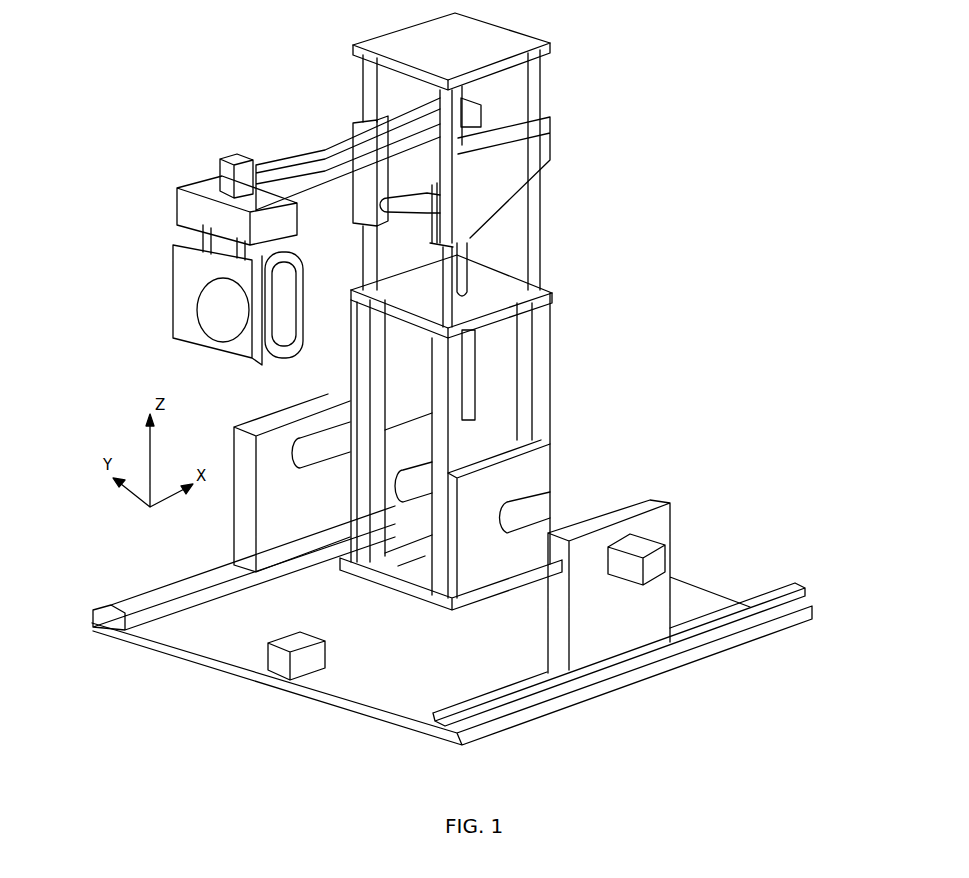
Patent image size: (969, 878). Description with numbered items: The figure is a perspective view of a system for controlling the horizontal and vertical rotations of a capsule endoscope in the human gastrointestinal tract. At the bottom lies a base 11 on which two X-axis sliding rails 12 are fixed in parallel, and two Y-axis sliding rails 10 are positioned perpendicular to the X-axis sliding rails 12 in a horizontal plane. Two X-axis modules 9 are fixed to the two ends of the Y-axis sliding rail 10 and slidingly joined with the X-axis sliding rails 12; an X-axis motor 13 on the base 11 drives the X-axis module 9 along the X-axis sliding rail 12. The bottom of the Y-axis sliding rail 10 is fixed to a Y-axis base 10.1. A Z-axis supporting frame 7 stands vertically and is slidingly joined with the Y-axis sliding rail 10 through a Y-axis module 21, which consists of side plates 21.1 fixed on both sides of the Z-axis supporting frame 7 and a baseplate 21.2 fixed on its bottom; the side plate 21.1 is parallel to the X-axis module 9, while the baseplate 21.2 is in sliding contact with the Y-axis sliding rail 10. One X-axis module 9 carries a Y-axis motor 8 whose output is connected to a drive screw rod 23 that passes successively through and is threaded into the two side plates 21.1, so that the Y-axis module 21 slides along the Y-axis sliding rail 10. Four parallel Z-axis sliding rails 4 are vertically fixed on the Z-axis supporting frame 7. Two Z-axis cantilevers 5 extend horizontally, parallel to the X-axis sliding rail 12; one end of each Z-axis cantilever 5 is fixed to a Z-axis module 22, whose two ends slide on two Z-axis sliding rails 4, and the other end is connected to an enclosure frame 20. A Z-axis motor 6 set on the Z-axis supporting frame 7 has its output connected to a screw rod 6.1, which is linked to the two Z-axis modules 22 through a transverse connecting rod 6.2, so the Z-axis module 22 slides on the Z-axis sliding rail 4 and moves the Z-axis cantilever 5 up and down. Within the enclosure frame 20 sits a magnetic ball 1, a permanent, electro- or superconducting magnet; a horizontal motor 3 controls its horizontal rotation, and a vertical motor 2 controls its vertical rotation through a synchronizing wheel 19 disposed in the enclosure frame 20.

The magnetic ball 1 is at (222, 316).
The vertical motor 2 is at (257, 265).
The horizontal motor 3 is at (230, 174).
The Z-axis sliding rail 4 is at (540, 87).
The Z-axis cantilever 5 is at (378, 181).
The Z-axis motor 6 is at (470, 338).
The screw rod 6.1 is at (460, 269).
The transverse connecting rod 6.2 is at (413, 210).
The Z-axis supporting frame 7 is at (540, 372).
The Y-axis motor 8 is at (650, 560).
The X-axis module 9 is at (640, 608).
The Y-axis sliding rail 10 is at (518, 628).
The Y-axis base 10.1 is at (325, 540).
The base 11 is at (632, 687).
The X-axis sliding rail 12 is at (527, 688).
The X-axis motor 13 is at (300, 662).
The synchronizing wheel 19 is at (290, 332).
The enclosure frame 20 is at (197, 248).
The Y-axis module 21 is at (407, 548).
The side plate 21.1 is at (538, 477).
The baseplate 21.2 is at (408, 562).
The Z-axis module 22 is at (540, 133).
The drive screw rod 23 is at (530, 518).